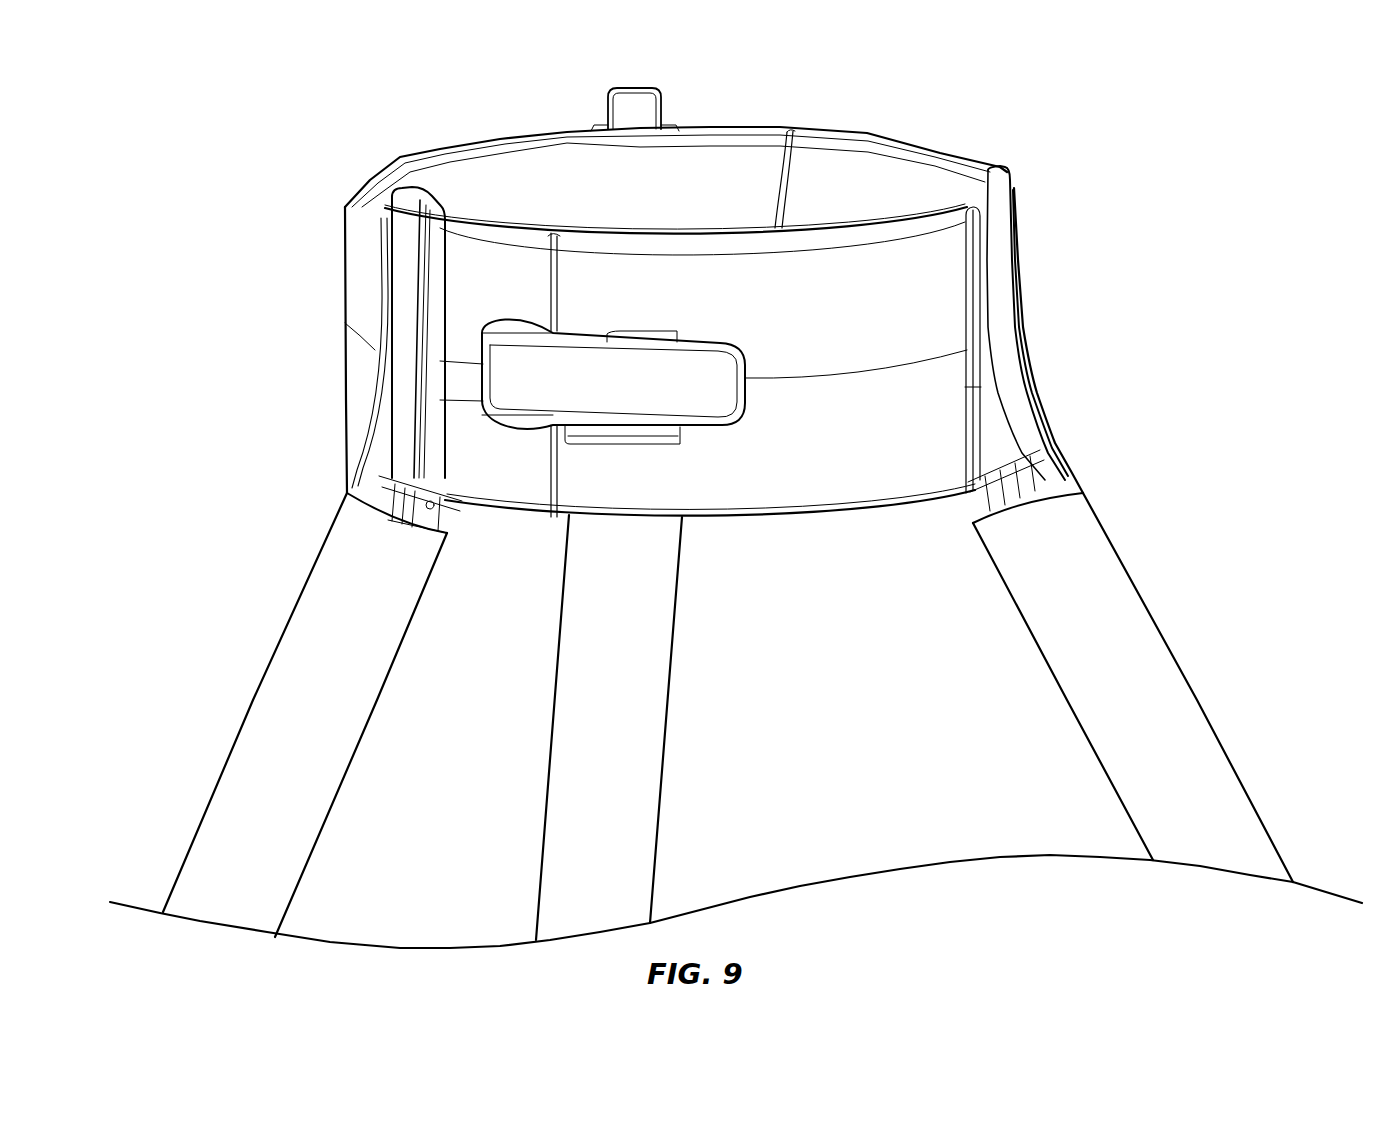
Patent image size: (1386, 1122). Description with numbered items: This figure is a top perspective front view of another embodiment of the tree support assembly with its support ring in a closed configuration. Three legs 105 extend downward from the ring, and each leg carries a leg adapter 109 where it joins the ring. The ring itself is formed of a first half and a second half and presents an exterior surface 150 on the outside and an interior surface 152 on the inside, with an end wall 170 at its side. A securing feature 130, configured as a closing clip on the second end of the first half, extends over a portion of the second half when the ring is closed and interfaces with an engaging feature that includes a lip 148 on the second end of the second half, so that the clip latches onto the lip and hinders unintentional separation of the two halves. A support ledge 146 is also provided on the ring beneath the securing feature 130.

The legs 105 is at (243, 720).
The leg adapters 109 is at (652, 107).
The securing feature 130 is at (619, 400).
The support ledge 146 is at (620, 430).
The lip 148 is at (690, 332).
The exterior surface 150 is at (765, 488).
The interior surface 152 is at (873, 173).
The end wall 170 is at (420, 155).